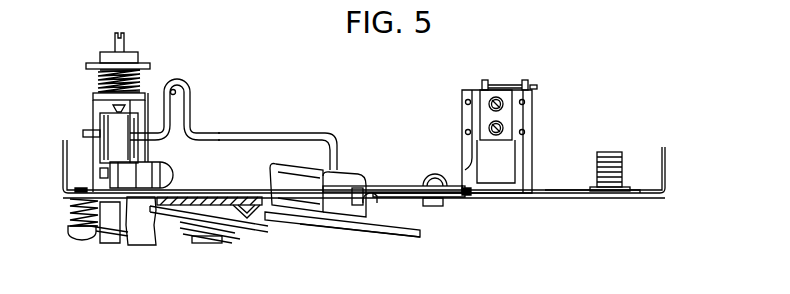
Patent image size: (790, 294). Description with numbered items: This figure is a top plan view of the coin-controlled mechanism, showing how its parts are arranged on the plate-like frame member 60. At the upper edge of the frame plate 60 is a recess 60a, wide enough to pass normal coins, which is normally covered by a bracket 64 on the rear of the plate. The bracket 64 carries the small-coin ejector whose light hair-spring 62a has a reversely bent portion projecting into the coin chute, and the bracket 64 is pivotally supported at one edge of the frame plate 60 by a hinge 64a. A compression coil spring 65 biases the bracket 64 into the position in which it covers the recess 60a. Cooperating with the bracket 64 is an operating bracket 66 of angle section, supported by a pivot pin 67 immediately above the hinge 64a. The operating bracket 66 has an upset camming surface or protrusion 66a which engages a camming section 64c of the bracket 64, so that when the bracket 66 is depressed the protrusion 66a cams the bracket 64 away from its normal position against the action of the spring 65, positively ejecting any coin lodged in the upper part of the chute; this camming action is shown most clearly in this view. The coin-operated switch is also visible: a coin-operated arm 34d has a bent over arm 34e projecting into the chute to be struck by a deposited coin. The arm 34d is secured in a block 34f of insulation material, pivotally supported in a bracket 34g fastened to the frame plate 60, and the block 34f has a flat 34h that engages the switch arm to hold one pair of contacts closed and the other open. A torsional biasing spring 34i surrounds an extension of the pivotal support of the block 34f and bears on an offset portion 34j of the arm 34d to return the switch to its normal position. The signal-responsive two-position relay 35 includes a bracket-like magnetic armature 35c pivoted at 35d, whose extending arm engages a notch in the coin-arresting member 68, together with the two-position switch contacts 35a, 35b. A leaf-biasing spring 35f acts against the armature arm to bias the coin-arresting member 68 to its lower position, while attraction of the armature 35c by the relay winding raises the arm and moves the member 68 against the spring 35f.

The coin-operated element or arm 34d is at (232, 133).
The bent over arm 34e is at (333, 158).
The block of insulation material 34f is at (100, 120).
The bracket 34g is at (95, 100).
The flat 34h is at (130, 146).
The torsional biasing spring 34i is at (138, 82).
The offset portion 34j is at (182, 84).
The two-position relay or switch 35 is at (505, 150).
The switch contact 35a is at (468, 108).
The switch contact 35b is at (505, 80).
The magnetic armature 35c is at (512, 80).
The pivot 35d is at (538, 88).
The leaf-biasing spring 35f is at (518, 170).
The plate-like frame member 60 is at (545, 199).
The recess 60a is at (395, 197).
The light hair-spring 62a is at (415, 231).
The bracket 64 is at (309, 226).
The hinge 64a is at (106, 240).
The camming section 64c is at (252, 218).
The compression coil spring 65 is at (190, 242).
The operating bracket 66 is at (141, 244).
The camming surface or protrusion 66a is at (243, 200).
The pivot pin 67 is at (68, 223).
The coin-arresting member 68 is at (468, 192).